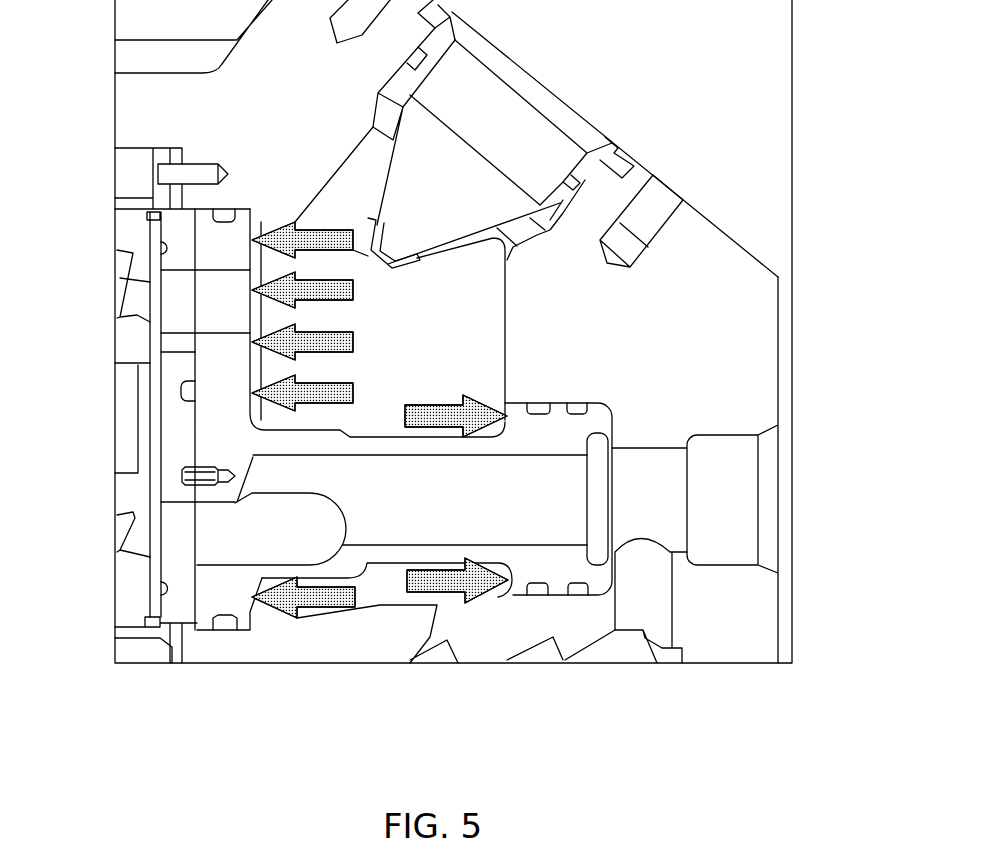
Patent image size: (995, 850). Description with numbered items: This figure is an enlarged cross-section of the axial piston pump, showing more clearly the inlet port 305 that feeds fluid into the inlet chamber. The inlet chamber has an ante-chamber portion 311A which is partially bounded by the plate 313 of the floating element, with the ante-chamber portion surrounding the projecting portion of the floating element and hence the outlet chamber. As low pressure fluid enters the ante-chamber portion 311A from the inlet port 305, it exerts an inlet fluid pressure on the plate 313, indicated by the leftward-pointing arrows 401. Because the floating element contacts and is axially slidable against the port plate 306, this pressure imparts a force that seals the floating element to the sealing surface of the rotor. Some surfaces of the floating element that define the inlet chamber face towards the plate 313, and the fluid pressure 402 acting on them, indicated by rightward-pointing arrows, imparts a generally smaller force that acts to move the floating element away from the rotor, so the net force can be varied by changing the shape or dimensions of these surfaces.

The inlet port 305 is at (497, 108).
The port plate 306 is at (172, 460).
The ante-chamber portion 311A is at (417, 325).
The plate 313 is at (217, 237).
The leftward-pointing arrows 401 is at (317, 223).
The fluid pressure 402 is at (476, 600).